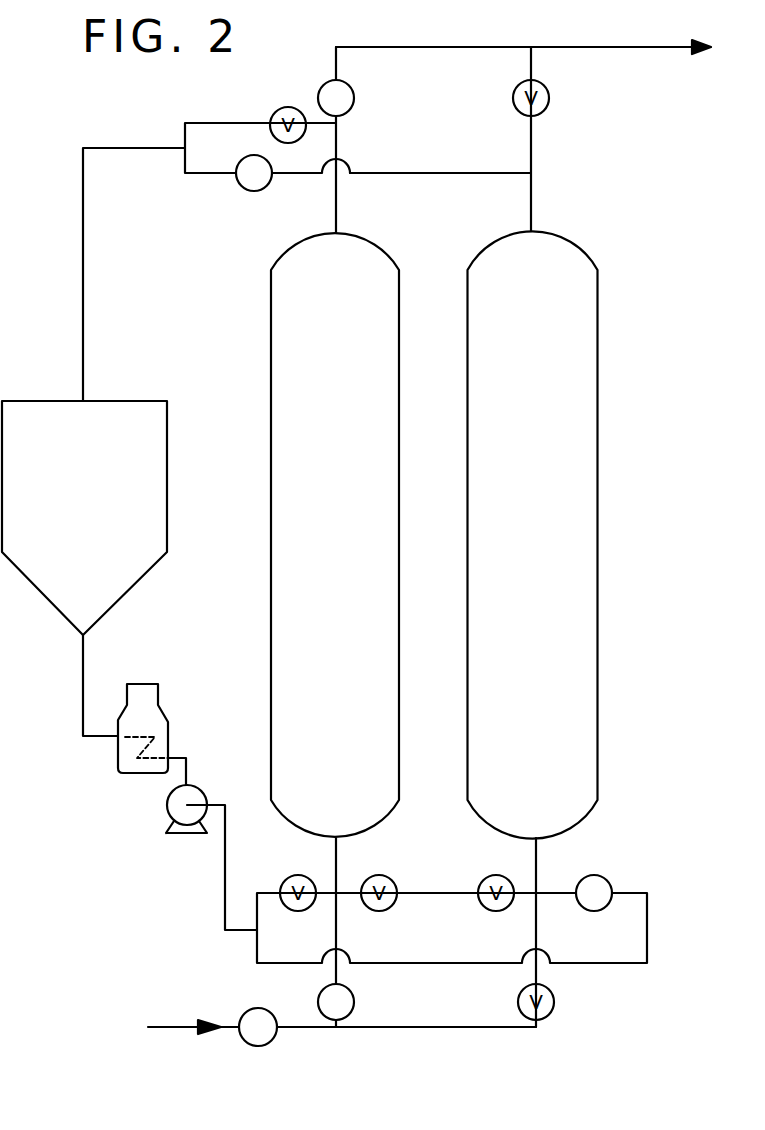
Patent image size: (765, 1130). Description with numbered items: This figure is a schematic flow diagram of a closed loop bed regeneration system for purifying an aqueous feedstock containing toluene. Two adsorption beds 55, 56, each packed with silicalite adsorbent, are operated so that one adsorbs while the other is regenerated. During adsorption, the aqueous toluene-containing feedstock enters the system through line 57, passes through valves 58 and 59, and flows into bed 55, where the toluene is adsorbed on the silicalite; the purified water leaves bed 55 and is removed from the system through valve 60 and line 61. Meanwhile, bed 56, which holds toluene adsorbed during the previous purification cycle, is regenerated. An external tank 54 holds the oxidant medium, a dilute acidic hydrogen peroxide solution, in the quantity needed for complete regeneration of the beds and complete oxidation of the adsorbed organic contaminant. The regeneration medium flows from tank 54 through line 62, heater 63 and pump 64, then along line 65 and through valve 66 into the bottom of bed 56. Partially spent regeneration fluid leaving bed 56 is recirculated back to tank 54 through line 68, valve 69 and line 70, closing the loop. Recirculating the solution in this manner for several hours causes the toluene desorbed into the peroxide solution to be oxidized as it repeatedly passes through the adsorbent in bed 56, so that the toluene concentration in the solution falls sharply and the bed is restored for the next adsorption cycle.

The external tank 54 is at (167, 427).
The adsorption bed 55 is at (399, 467).
The adsorption bed 56 is at (598, 450).
The line 57 is at (180, 1029).
The valve 58 is at (265, 1046).
The valve 59 is at (359, 1001).
The valve 60 is at (353, 96).
The line 61 is at (598, 47).
The line 62 is at (83, 667).
The heater 63 is at (116, 757).
The pump 64 is at (162, 812).
The line 65 is at (257, 953).
The valve 66 is at (607, 880).
The line 68 is at (412, 173).
The valve 69 is at (247, 188).
The line 70 is at (107, 148).